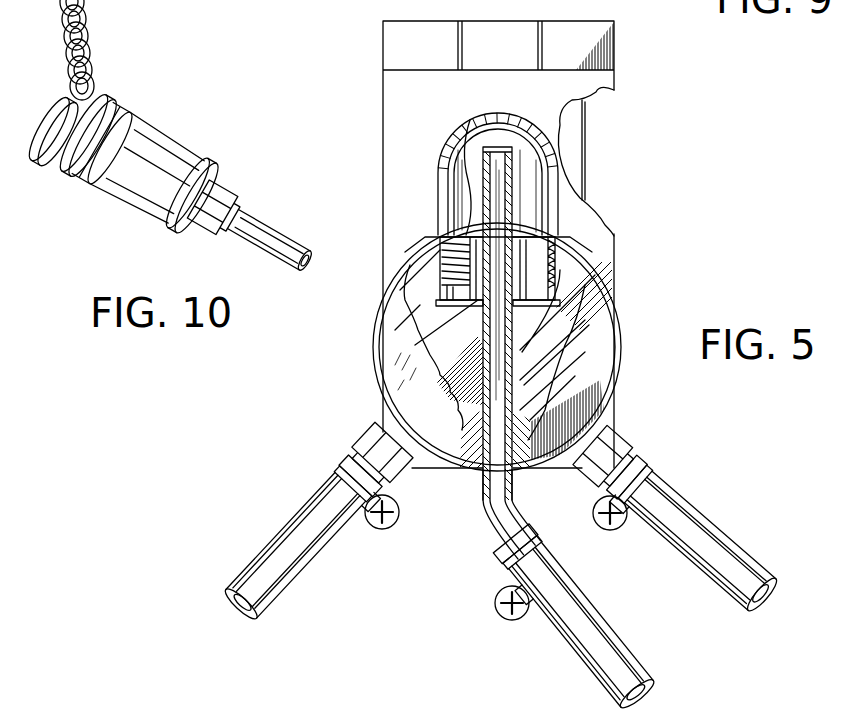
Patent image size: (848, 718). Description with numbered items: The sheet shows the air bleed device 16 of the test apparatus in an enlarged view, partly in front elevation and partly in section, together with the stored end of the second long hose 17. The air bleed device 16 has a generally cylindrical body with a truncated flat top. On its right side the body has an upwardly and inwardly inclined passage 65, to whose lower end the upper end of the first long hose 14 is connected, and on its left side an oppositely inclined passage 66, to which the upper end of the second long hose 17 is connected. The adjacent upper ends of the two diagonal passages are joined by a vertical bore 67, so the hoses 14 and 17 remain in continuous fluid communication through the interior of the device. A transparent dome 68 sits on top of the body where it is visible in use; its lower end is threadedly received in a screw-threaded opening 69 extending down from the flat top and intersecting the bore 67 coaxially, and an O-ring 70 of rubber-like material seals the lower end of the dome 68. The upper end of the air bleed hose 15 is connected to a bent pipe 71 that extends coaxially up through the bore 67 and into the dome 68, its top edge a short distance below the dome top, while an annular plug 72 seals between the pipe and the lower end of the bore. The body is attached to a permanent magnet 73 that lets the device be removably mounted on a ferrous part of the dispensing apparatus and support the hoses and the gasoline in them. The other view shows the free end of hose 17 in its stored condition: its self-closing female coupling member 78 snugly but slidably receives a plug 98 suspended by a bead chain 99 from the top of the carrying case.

In FIG. 5, the first long hose 14 is at (733, 551).
In FIG. 5, the air bleed hose 15 is at (636, 648).
In FIG. 5, the air bleed device 16 is at (611, 347).
In FIG. 10, the second long hose 17 is at (279, 232).
In FIG. 5, the second long hose 17 is at (263, 543).
In FIG. 5, the upwardly and inwardly inclined passage 65 is at (550, 393).
In FIG. 5, the oppositely inclined passage 66 is at (452, 392).
In FIG. 5, the vertical bore 67 is at (478, 321).
In FIG. 5, the transparent dome 68 is at (478, 118).
In FIG. 5, the screw-threaded opening 69 is at (590, 246).
In FIG. 5, the O-ring 70 is at (563, 320).
In FIG. 5, the bent pipe 71 is at (490, 519).
In FIG. 5, the annular plug 72 is at (516, 462).
In FIG. 5, the permanent magnet 73 is at (598, 82).
In FIG. 10, the self-closing female coupling member 78 is at (158, 130).
In FIG. 10, the plug 98 is at (57, 118).
In FIG. 10, the bead chain 99 is at (91, 41).